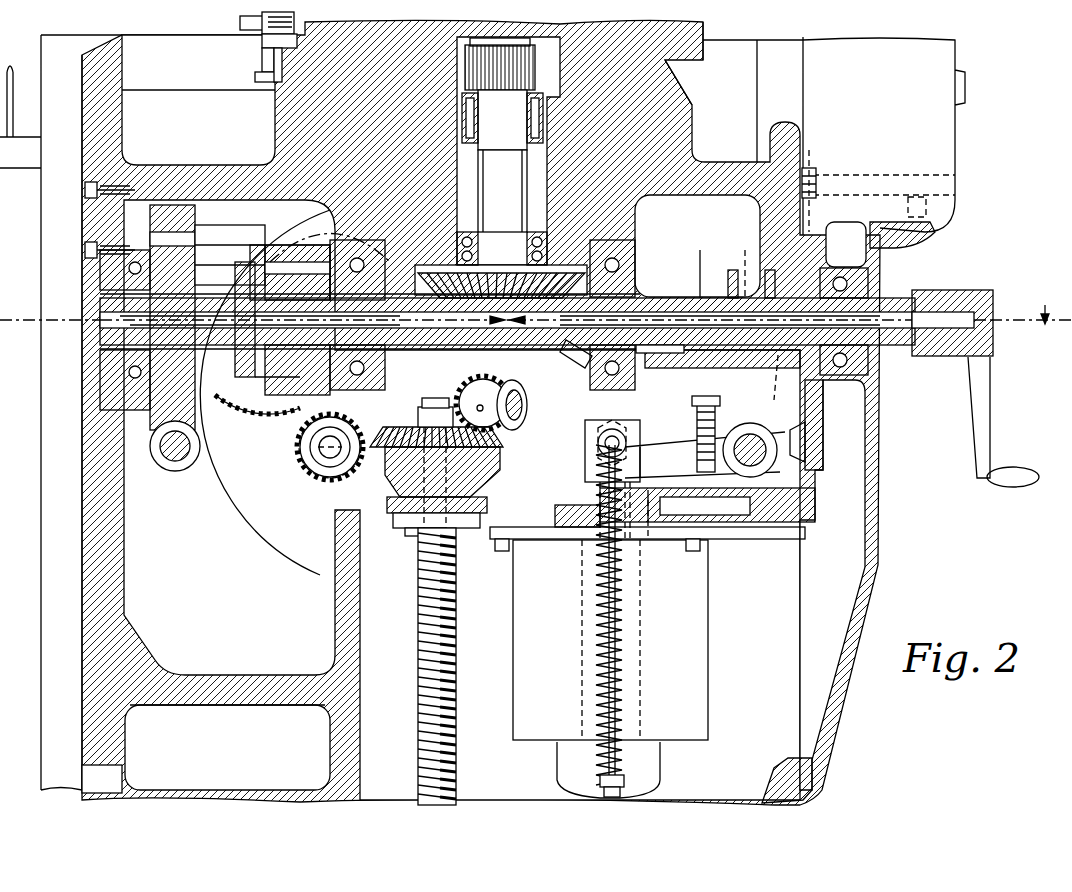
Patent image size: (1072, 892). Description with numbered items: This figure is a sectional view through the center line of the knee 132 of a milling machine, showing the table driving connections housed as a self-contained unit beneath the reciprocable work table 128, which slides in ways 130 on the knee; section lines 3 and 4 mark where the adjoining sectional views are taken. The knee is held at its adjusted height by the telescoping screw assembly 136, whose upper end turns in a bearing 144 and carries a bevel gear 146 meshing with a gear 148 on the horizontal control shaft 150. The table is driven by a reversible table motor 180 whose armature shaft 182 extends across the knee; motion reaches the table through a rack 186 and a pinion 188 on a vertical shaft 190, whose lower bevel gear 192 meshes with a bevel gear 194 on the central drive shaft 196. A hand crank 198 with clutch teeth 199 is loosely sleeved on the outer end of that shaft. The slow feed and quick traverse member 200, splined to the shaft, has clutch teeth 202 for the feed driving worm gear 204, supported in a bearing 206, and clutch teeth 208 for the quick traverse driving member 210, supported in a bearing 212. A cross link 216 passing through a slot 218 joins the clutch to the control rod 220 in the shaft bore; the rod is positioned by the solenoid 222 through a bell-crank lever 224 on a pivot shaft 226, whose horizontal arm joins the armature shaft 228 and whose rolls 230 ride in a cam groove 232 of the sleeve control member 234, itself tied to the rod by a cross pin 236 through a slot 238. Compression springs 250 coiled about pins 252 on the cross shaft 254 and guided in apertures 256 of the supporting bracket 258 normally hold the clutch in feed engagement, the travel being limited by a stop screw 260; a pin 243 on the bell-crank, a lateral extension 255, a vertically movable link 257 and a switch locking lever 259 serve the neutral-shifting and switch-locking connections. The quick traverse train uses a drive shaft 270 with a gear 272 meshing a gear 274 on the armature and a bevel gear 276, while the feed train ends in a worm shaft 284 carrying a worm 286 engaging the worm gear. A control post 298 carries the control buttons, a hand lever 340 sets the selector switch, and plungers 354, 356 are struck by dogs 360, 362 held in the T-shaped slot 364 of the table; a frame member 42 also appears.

The section line 3— 3 is at (1042, 304).
The section line 4— 4 is at (46, 470).
The frame member 42 is at (22, 162).
The reciprocable work table 128 is at (692, 64).
The ways 130 is at (660, 85).
The knee 132 is at (338, 748).
The telescoping screw assembly 136 is at (420, 626).
The bearing 144 is at (478, 520).
The bevel gear 146 is at (428, 427).
The gear 148 is at (508, 382).
The control shaft 150 is at (526, 410).
The table motor 180 is at (308, 556).
The armature shaft 182 is at (330, 480).
The rack 186 is at (528, 165).
The pinion 188 is at (500, 100).
The vertical shaft 190 is at (484, 198).
The bevel gear 192 is at (505, 280).
The bevel gear 194 is at (578, 350).
The drive shaft 196 is at (690, 345).
The hand crank 198 is at (984, 378).
The clutch teeth 199 is at (916, 356).
The slow feed and quick traverse member 200 is at (255, 250).
The clutch teeth 202 is at (215, 255).
The feed driving worm gear 204 is at (172, 210).
The bearing 206 is at (100, 272).
The clutch teeth 208 is at (300, 264).
The quick traverse driving member 210 is at (306, 398).
The bearing 212 is at (382, 362).
The cross link 216 is at (245, 266).
The slot 218 is at (246, 378).
The control rod 220 is at (105, 318).
The solenoid 222 is at (708, 652).
The bell-crank lever 224 is at (735, 376).
The pivot shaft 226 is at (752, 458).
The armature shaft 228 is at (640, 425).
The rolls 230 is at (733, 268).
The cam groove 232 is at (745, 300).
The sleeve control member 234 is at (762, 298).
The cross pin 236 is at (812, 400).
The slot 238 is at (727, 382).
The pin 243 is at (745, 420).
The compression springs 250 is at (602, 474).
The pins 252 is at (605, 455).
The cross shaft 254 is at (560, 790).
The lateral extension 255 is at (808, 455).
The apertures 256 is at (576, 548).
The vertically movable link 257 is at (812, 430).
The supporting bracket 258 is at (642, 550).
The switch locking lever 259 is at (816, 178).
The stop screw 260 is at (722, 524).
The drive shaft 270 is at (258, 368).
The gear 272 is at (418, 418).
The gear 274 is at (300, 460).
The bevel gear 276 is at (300, 446).
The worm shaft 284 is at (185, 470).
The worm 286 is at (168, 466).
The control post 298 is at (935, 135).
The hand lever 340 is at (8, 70).
The plunger 354 is at (258, 80).
The plunger 356 is at (278, 72).
The dog 360 is at (262, 60).
The dog 362 is at (268, 46).
The T-shaped slot 364 is at (248, 30).